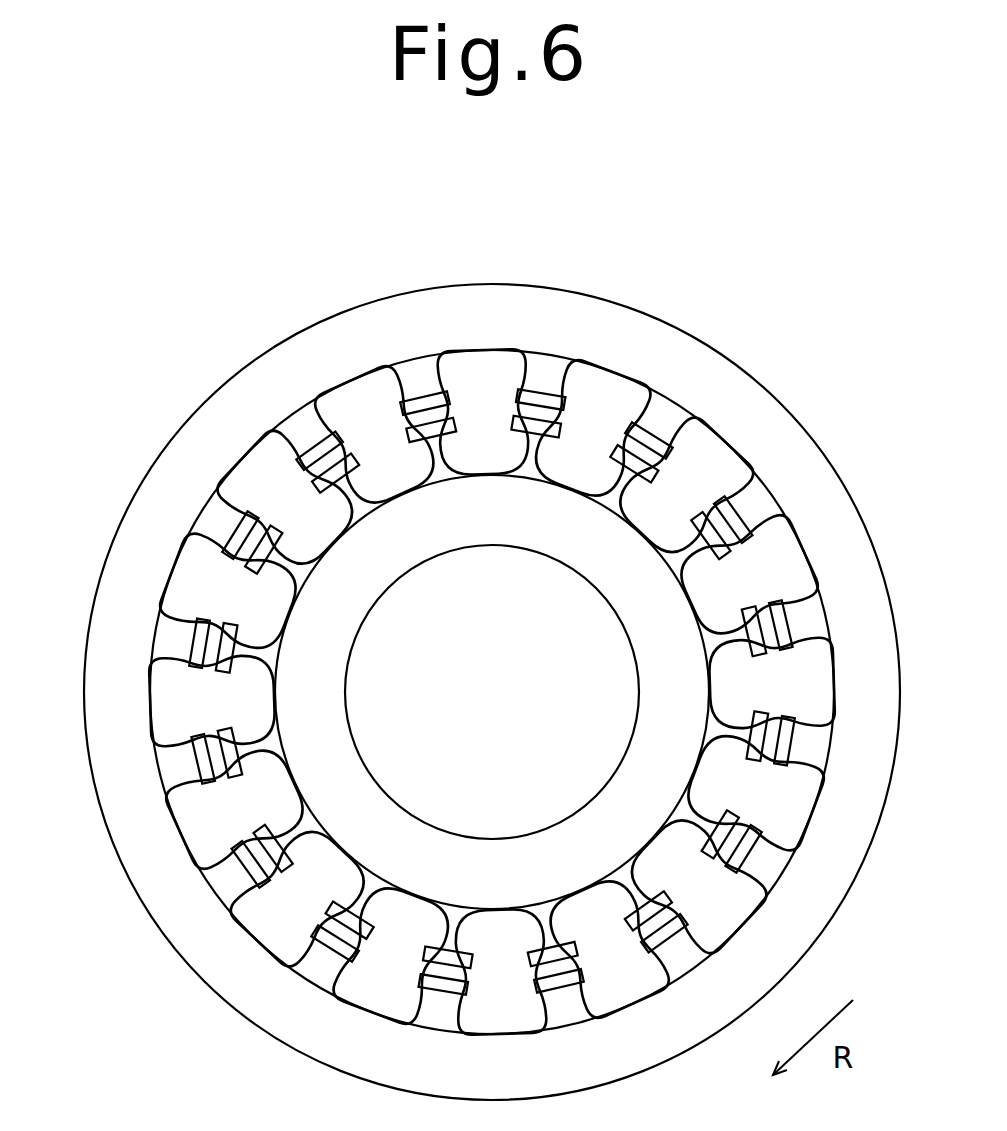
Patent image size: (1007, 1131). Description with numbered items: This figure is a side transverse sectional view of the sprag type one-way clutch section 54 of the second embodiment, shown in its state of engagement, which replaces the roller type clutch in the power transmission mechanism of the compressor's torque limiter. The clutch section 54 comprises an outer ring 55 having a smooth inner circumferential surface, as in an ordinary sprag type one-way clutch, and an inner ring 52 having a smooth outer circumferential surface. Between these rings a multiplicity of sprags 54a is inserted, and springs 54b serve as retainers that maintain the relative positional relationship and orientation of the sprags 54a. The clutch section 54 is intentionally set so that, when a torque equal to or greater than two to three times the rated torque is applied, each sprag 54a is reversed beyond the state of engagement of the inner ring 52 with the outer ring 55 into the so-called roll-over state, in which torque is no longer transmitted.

The inner ring 52 is at (352, 812).
The sprag type one-way clutch section 54 is at (137, 460).
The sprags 54a is at (478, 373).
The springs 54b is at (430, 427).
The outer ring 55 is at (242, 405).